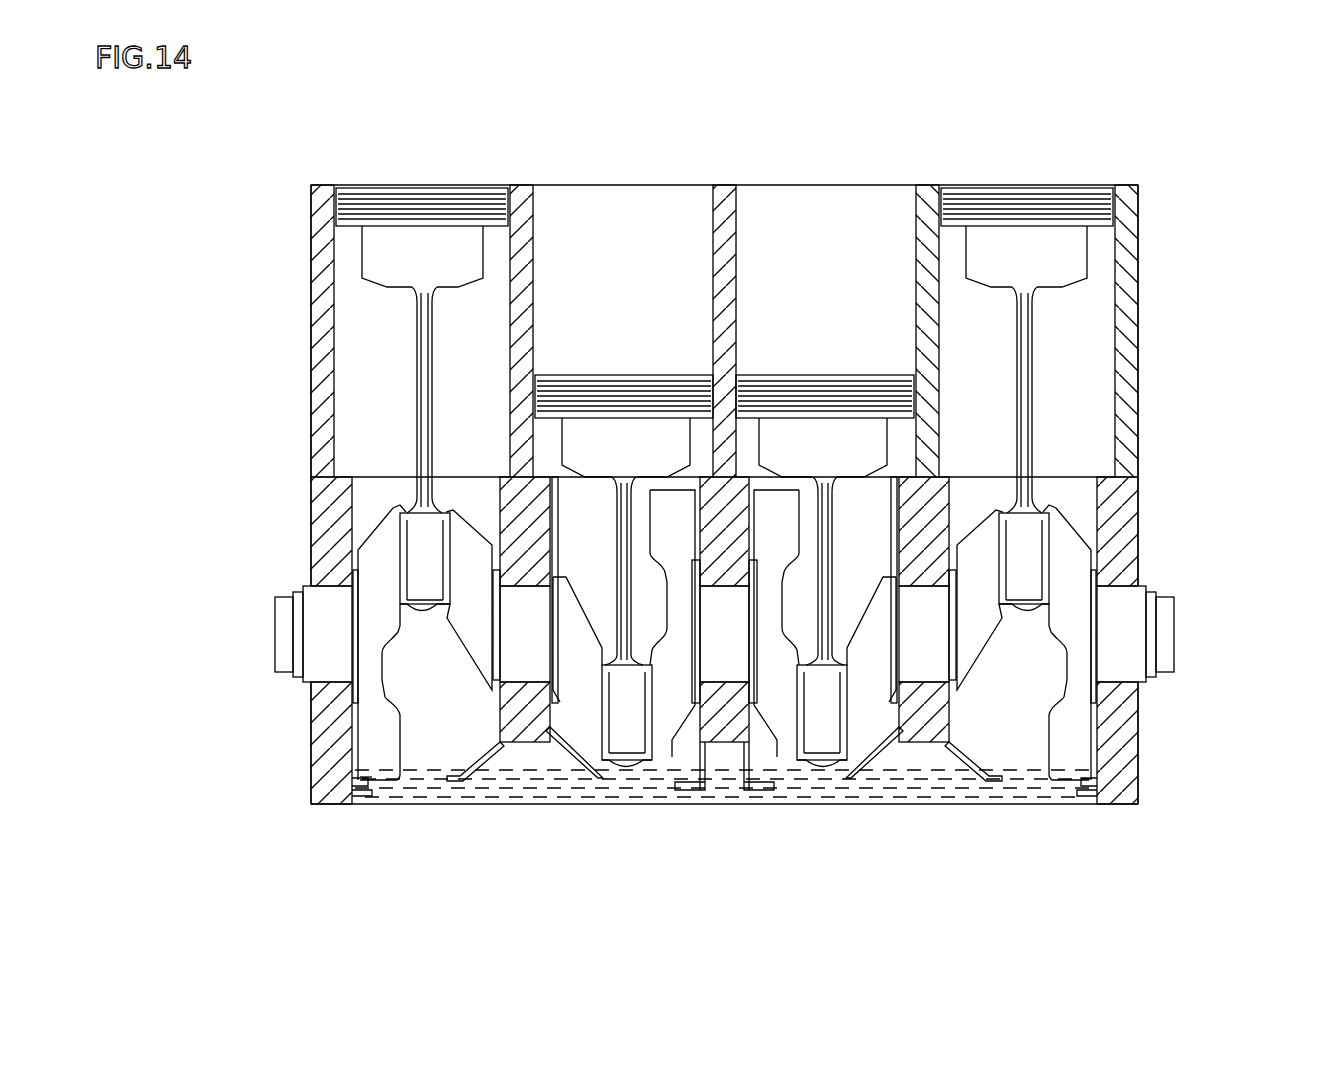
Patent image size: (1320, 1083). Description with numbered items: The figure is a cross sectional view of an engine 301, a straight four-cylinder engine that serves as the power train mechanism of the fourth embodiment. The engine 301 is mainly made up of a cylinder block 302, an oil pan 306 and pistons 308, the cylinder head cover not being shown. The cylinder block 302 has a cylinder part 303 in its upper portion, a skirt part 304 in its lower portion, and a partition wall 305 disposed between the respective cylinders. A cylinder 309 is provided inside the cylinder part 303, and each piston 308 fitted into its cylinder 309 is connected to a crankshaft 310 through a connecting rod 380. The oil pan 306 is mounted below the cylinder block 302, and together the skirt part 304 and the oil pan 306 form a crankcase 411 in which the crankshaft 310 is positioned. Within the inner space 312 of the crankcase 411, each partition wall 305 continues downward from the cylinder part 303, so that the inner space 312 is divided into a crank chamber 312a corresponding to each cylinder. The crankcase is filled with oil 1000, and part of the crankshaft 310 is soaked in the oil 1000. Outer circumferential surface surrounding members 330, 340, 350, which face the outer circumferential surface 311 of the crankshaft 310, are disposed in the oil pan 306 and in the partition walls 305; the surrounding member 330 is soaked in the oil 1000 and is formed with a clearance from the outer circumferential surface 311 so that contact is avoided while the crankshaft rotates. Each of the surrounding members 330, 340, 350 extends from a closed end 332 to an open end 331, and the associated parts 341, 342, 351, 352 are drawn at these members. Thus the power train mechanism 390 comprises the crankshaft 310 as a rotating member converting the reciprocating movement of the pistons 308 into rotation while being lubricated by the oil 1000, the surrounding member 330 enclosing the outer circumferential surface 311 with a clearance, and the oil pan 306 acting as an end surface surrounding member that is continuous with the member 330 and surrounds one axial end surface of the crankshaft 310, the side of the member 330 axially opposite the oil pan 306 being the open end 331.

The engine 301 is at (1131, 134).
The cylinder block 302 is at (246, 397).
The cylinder part 303 is at (322, 410).
The skirt part 304 is at (328, 524).
The partition wall 305 is at (513, 508).
The oil pan 306 is at (330, 751).
The piston 308 is at (410, 250).
The cylinder 309 is at (460, 313).
The crankshaft 310 is at (318, 641).
The outer circumferential surface 311 is at (368, 787).
The inner space 312 is at (1030, 760).
The crank chamber 312a is at (375, 490).
The outer circumferential surface surrounding member 330 is at (358, 790).
The open end 331 is at (370, 790).
The closed end 332 is at (362, 800).
The outer circumferential surface surrounding member 340 is at (546, 750).
The oil guide plate 341 is at (590, 780).
The oil guide plate 342 is at (503, 752).
The outer circumferential surface surrounding member 350 is at (703, 762).
The bearing 351 is at (680, 790).
The bearing cap 352 is at (750, 790).
The connecting rod 380 is at (413, 330).
The power train mechanism 390 is at (322, 840).
The crankcase 411 is at (1254, 578).
The oil 1000 is at (430, 775).